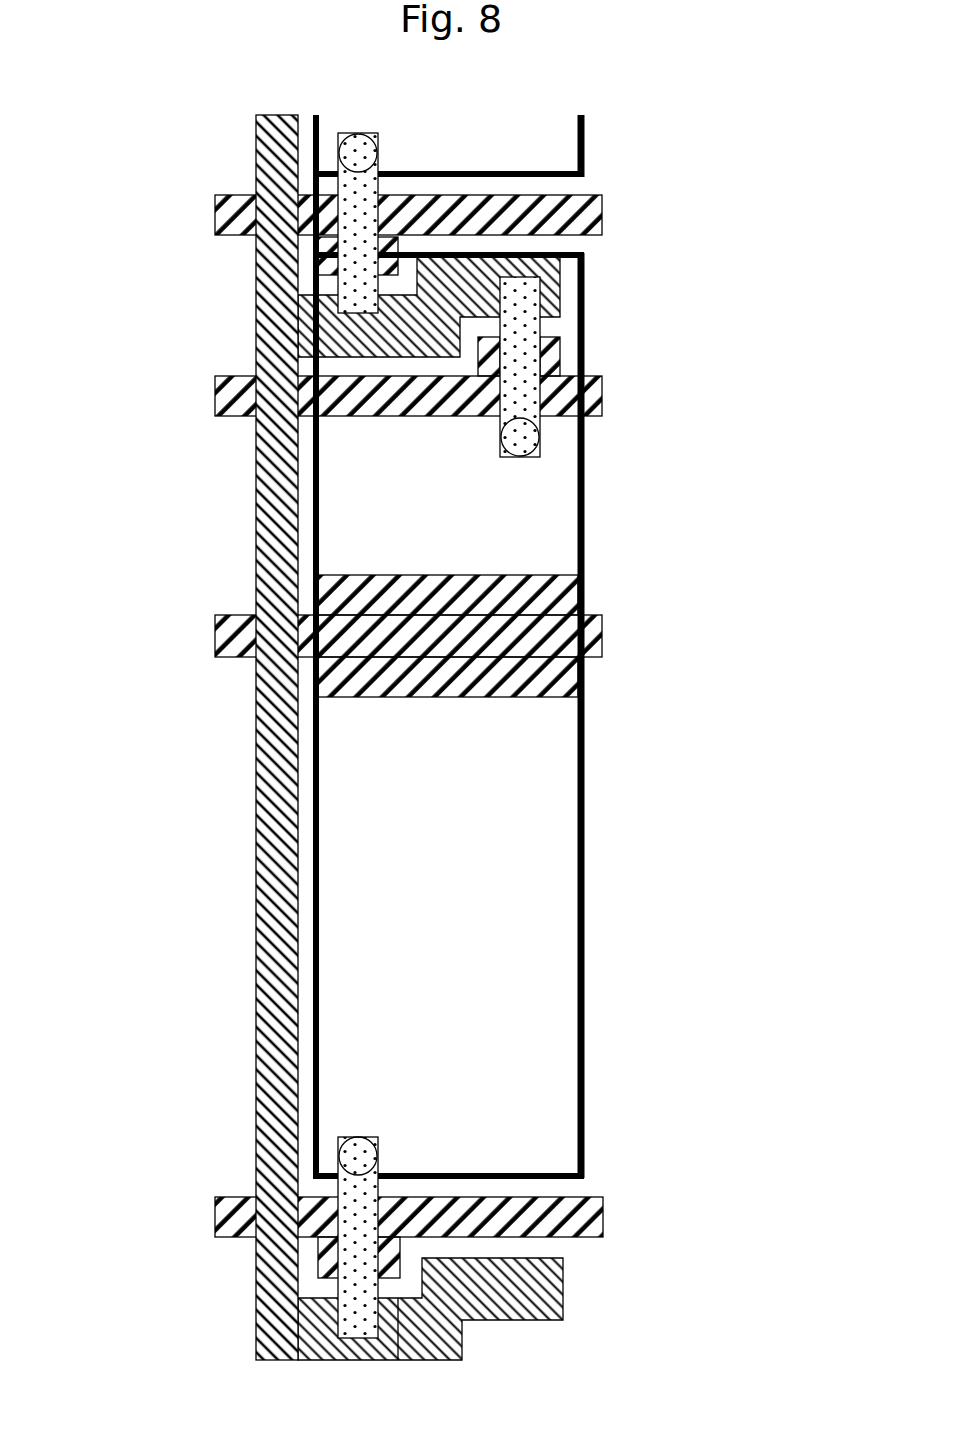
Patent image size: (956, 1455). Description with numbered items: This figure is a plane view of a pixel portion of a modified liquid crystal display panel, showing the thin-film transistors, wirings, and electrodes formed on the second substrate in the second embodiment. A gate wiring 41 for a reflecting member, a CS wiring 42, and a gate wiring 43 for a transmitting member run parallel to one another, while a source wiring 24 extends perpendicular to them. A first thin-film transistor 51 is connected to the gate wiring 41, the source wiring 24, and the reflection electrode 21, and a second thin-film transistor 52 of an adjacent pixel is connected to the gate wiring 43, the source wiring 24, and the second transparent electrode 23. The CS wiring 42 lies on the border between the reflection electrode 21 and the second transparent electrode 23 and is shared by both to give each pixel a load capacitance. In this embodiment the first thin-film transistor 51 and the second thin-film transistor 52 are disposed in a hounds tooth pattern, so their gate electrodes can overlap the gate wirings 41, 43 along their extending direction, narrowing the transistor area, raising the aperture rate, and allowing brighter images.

The reflection electrode 21 is at (553, 537).
The second transparent electrode 23 is at (543, 980).
The source wiring 24 is at (277, 702).
The gate wiring for a reflecting member 41 is at (590, 390).
The CS wiring 42 is at (592, 626).
The gate wiring for a transmitting member 43 is at (563, 1218).
The first thin-film transistor 51 is at (518, 350).
The second thin-film transistor 52 is at (363, 192).